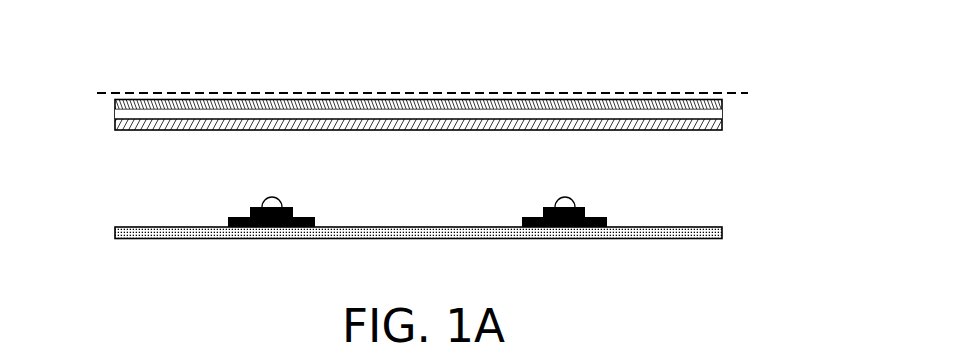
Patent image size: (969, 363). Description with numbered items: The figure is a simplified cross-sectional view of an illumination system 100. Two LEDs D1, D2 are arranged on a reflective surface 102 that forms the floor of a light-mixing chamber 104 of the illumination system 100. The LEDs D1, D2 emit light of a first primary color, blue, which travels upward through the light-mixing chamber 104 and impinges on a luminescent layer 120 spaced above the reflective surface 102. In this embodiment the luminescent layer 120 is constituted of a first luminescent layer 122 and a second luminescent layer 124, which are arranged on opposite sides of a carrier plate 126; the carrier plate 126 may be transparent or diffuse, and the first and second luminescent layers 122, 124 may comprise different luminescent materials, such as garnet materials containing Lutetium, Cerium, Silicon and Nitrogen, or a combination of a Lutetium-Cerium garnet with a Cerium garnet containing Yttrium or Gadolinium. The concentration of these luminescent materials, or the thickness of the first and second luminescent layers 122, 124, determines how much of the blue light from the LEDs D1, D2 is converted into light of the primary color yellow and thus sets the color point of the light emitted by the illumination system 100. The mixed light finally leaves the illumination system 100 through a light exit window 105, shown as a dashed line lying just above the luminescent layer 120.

The illumination system 100 is at (701, 24).
The reflective surface 102 is at (661, 222).
The light-mixing chamber 104 is at (692, 168).
The light exit window 105 is at (591, 88).
The luminescent layer 120 is at (426, 100).
The first luminescent layer 122 is at (138, 125).
The second luminescent layer 124 is at (133, 108).
The carrier plate 126 is at (120, 114).
The LED D1 is at (295, 212).
The LED D2 is at (543, 210).